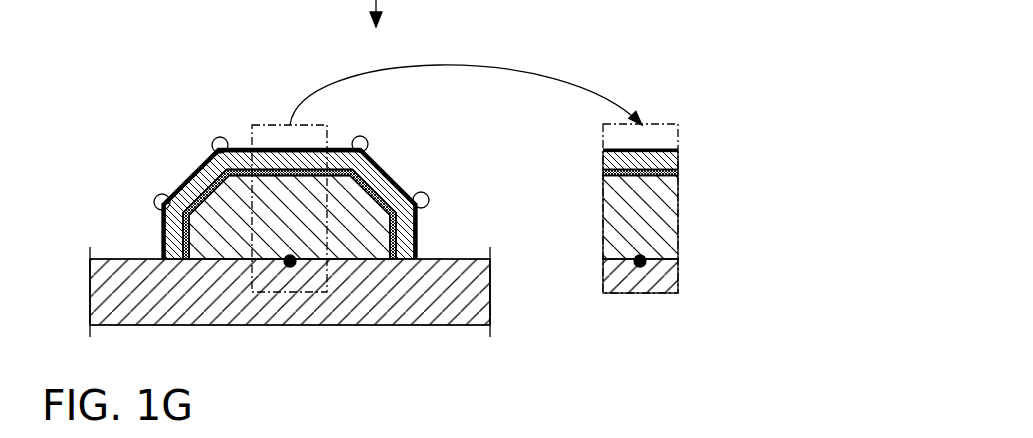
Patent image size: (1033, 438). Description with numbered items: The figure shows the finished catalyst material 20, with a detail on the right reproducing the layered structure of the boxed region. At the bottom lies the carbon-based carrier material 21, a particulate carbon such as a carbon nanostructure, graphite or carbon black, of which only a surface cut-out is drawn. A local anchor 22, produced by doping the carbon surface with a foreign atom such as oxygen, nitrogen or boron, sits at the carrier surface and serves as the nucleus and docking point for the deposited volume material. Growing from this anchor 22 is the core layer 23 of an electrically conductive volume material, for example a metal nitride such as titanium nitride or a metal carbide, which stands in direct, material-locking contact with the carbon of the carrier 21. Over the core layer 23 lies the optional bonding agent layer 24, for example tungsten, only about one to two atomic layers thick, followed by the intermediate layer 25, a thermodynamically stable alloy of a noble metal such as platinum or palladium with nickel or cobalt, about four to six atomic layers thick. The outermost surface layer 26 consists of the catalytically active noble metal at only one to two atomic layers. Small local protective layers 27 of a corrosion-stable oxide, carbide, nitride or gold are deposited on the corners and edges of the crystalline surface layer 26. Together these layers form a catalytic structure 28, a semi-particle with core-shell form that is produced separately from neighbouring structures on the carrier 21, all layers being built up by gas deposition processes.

The catalyst material 20 is at (137, 75).
The carbon-based carrier material 21 is at (466, 292).
The anchor 22 is at (288, 268).
The core layer 23 is at (367, 238).
The bonding agent layer 24 is at (382, 204).
The intermediate layer 25 is at (371, 180).
The surface layer 26 is at (238, 150).
The protective layer 27 is at (360, 143).
The catalytic structure 28 is at (164, 153).